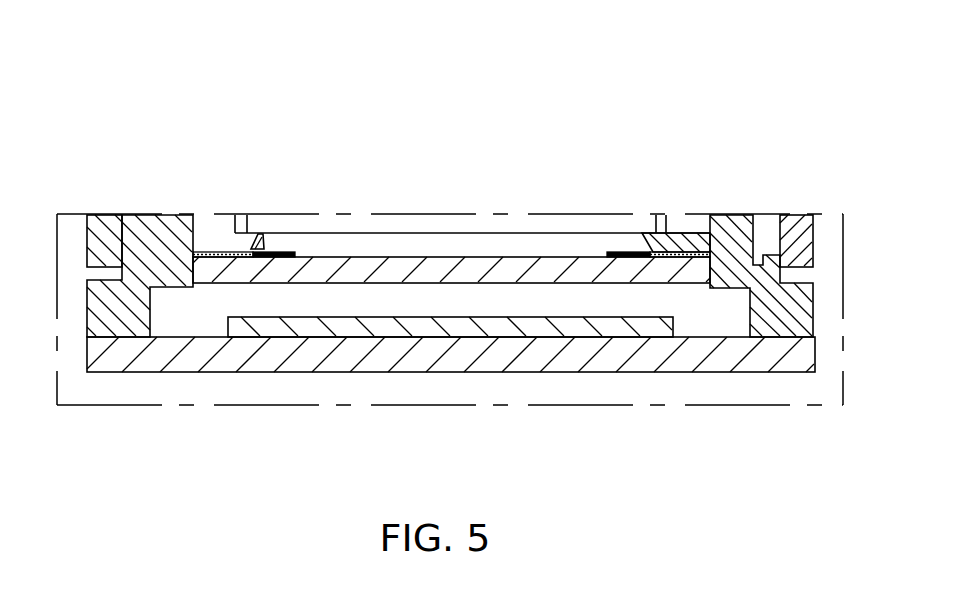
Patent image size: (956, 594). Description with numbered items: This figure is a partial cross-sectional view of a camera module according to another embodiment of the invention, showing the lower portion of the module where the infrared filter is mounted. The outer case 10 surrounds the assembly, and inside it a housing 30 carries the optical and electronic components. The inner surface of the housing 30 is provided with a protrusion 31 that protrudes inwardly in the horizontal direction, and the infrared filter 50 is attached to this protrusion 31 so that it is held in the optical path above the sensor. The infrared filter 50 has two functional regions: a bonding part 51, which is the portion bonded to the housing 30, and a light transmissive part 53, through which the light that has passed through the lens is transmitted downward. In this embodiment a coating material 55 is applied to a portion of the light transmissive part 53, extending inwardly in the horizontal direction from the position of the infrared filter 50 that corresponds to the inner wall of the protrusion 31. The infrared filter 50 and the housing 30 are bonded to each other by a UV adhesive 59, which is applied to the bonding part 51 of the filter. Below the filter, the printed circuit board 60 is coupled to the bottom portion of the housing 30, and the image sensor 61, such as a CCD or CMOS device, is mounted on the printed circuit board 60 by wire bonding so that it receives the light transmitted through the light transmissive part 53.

The case 10 is at (112, 230).
The housing 30 is at (158, 262).
The protrusion 31 is at (243, 243).
The infrared filter 50 is at (451, 178).
The bonding part 51 is at (667, 268).
The light transmissive part 53 is at (530, 268).
The coating material 55 is at (243, 258).
The UV adhesive 59 is at (693, 257).
The printed circuit board 60 is at (473, 350).
The image sensor 61 is at (366, 327).